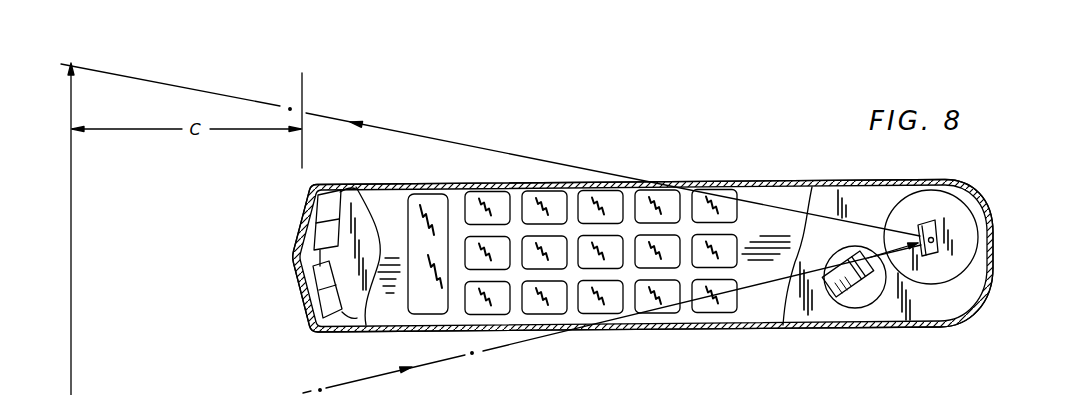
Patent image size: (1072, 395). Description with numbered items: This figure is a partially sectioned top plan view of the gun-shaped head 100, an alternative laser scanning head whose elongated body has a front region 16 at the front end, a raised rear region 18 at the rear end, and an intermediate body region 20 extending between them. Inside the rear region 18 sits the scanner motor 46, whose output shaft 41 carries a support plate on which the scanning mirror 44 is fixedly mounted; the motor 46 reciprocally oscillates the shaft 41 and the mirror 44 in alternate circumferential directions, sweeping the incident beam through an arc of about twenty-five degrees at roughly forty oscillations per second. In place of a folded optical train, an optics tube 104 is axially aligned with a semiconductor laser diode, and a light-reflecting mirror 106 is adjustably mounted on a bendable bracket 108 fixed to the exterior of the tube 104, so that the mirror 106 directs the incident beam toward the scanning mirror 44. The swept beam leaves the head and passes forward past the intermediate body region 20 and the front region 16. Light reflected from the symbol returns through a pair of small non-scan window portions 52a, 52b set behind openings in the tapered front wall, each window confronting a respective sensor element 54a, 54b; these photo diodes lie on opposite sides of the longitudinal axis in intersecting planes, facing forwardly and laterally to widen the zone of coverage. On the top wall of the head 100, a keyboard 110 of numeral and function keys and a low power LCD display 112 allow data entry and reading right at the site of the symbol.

The front region 16 is at (385, 237).
The raised rear region 18 is at (998, 278).
The intermediate body region 20 is at (782, 228).
The output shaft 41 is at (937, 226).
The scanning mirror 44 is at (920, 224).
The scanner motor 46 is at (967, 237).
The non-scan window portion 52a is at (307, 220).
The non-scan window portion 52b is at (310, 305).
The sensor element 54a is at (358, 187).
The sensor element 54b is at (358, 316).
The gun-shaped head 100 is at (1003, 191).
The optics tube 104 is at (905, 280).
The light-reflecting mirror 106 is at (886, 290).
The bendable bracket 108 is at (823, 304).
The keyboard 110 is at (600, 193).
The display 112 is at (430, 212).